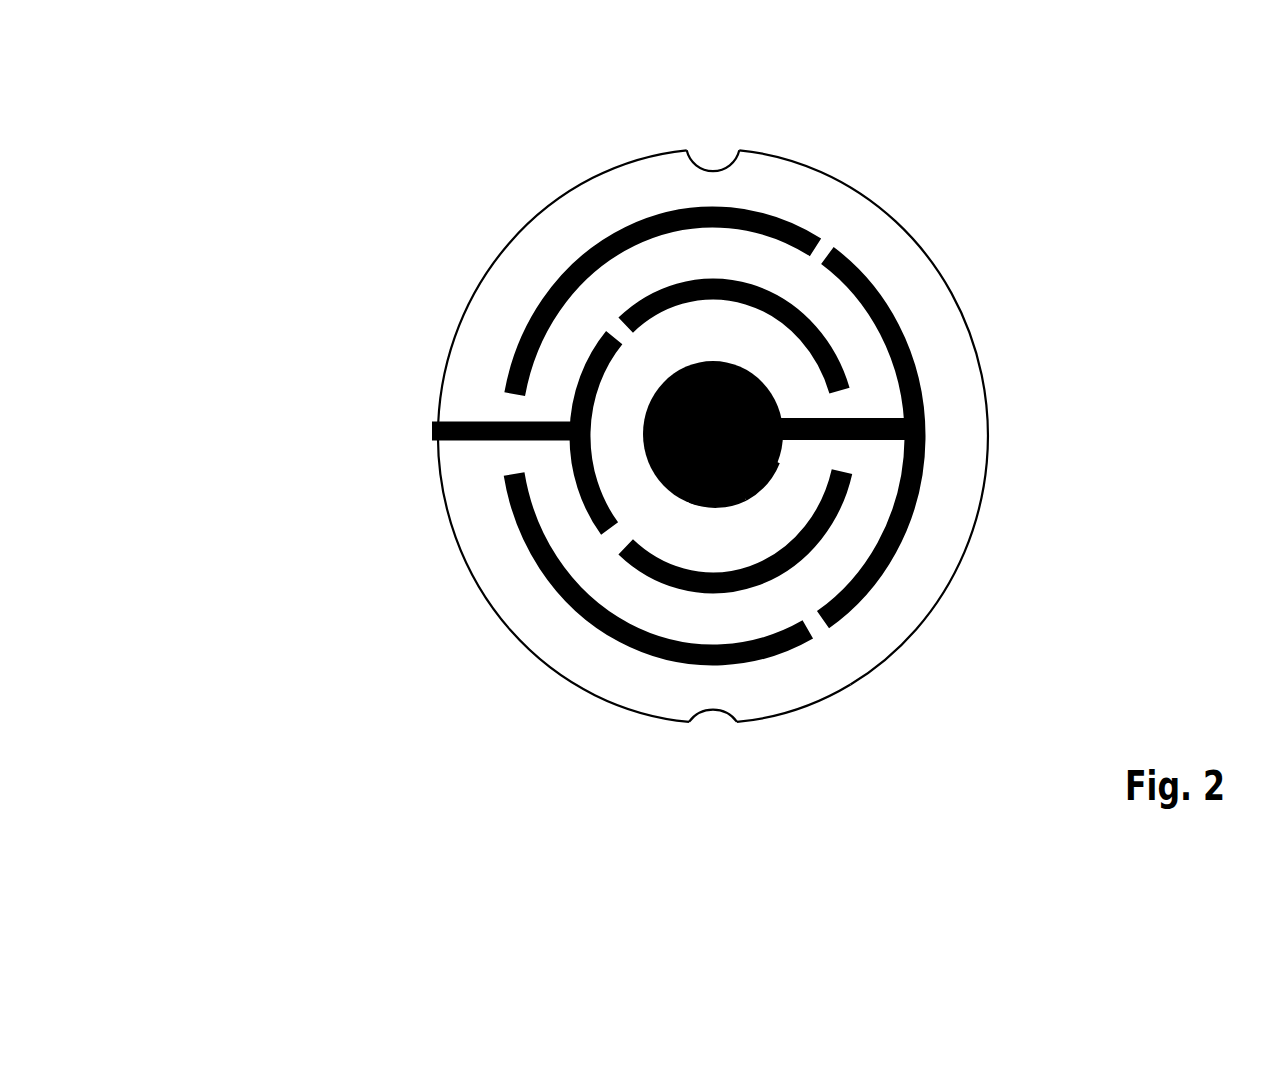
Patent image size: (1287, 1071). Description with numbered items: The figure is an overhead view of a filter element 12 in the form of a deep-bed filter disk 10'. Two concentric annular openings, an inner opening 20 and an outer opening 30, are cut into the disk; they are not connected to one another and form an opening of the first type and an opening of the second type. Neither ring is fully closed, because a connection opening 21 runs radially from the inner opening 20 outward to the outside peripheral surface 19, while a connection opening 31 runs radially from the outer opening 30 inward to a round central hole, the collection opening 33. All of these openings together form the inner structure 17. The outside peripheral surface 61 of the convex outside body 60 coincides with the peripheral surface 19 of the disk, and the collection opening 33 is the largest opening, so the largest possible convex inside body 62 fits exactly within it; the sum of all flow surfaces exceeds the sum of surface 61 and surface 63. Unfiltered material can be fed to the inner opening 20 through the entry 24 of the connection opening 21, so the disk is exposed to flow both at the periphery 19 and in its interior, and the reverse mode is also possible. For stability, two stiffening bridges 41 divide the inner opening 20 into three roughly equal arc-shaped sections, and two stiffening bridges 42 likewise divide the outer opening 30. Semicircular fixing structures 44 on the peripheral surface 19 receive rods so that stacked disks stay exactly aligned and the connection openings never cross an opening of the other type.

The filter disk 10' is at (722, 428).
The substrate body 12 is at (890, 607).
The inner structure 17 is at (677, 283).
The outside peripheral surface of the filter disk 19 is at (895, 650).
The inner annular opening 20 is at (797, 547).
The connection opening 21 is at (493, 425).
The entry of the connection opening 24 is at (432, 435).
The outer annular opening 30 is at (890, 312).
The connection opening 31 is at (925, 418).
The collection opening 33 is at (737, 365).
The stiffening bridges 41 is at (610, 545).
The stiffening bridges 42 is at (838, 252).
The fixing structures 44 is at (710, 150).
The convex outside body 60 is at (515, 640).
The outside peripheral surface of the convex outside body 61 is at (461, 460).
The convex inside body 62 is at (727, 505).
The surface 63 is at (760, 483).